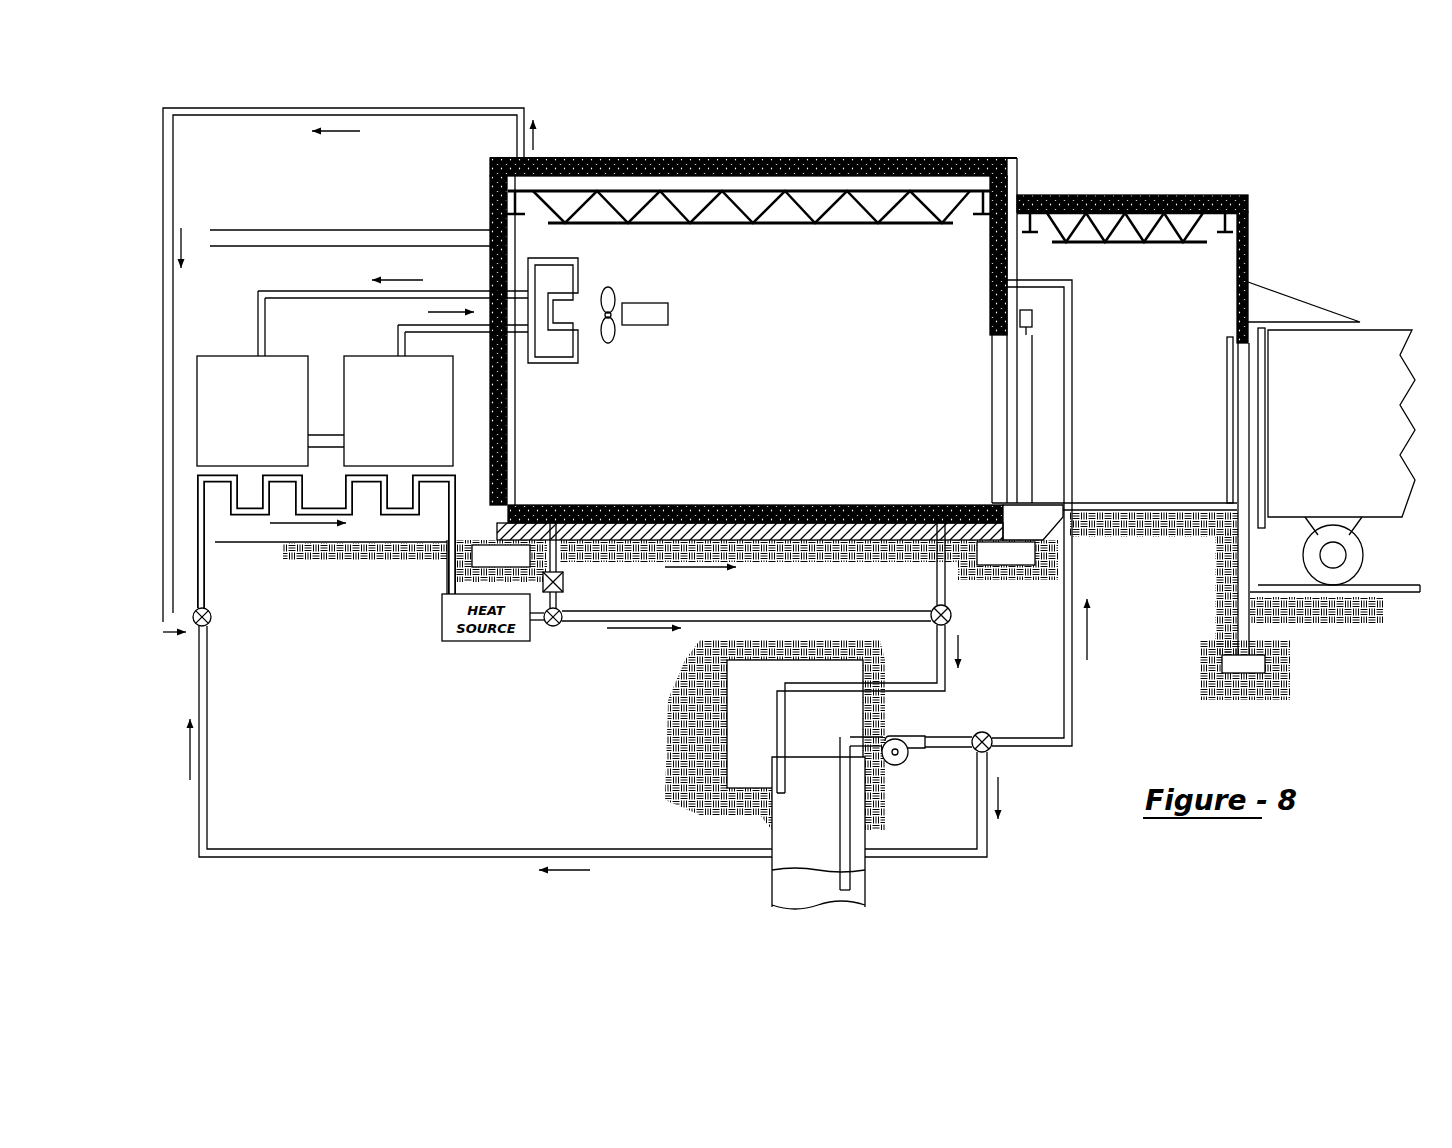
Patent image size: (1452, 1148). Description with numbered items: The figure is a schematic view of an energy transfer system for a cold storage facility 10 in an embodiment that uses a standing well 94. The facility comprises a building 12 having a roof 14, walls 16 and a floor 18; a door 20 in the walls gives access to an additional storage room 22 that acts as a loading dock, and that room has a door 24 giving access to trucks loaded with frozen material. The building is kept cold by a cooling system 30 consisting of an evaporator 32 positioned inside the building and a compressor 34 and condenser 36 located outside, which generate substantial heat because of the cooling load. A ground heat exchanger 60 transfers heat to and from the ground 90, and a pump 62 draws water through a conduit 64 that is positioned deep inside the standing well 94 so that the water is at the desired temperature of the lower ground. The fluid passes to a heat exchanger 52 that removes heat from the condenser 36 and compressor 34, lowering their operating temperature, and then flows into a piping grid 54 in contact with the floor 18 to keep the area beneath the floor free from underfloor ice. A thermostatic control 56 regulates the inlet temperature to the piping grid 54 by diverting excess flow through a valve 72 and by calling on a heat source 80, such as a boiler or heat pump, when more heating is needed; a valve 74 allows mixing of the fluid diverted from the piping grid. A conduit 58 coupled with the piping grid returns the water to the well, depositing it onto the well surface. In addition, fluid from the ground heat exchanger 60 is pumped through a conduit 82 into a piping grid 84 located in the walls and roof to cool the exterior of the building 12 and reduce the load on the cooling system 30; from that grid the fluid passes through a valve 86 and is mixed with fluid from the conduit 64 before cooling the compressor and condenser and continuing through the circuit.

The cold storage facility 10 is at (692, 146).
The building 12 is at (587, 157).
The roof 14 is at (833, 157).
The walls 16 is at (490, 195).
The floor 18 is at (950, 513).
The door 20 is at (1028, 420).
The additional storage room 22 is at (1147, 280).
The door 24 is at (1249, 305).
The cooling system 30 is at (281, 268).
The evaporator 32 is at (528, 275).
The compressor 34 is at (216, 352).
The condenser 36 is at (366, 355).
The heat exchanger 52 is at (238, 536).
The piping grid 54 is at (785, 545).
The thermostatic control 56 is at (564, 580).
The conduit 58 is at (947, 597).
The ground heat exchanger 60 is at (868, 723).
The pump 62 is at (903, 760).
The conduit 64 is at (226, 775).
The valve 72 is at (564, 607).
The valve 74 is at (933, 605).
The heat source 80 is at (532, 637).
The conduit 82 is at (1086, 540).
The piping grid 84 is at (968, 157).
The valve 86 is at (214, 618).
The ground 90 is at (676, 747).
The standing well 94 is at (772, 833).